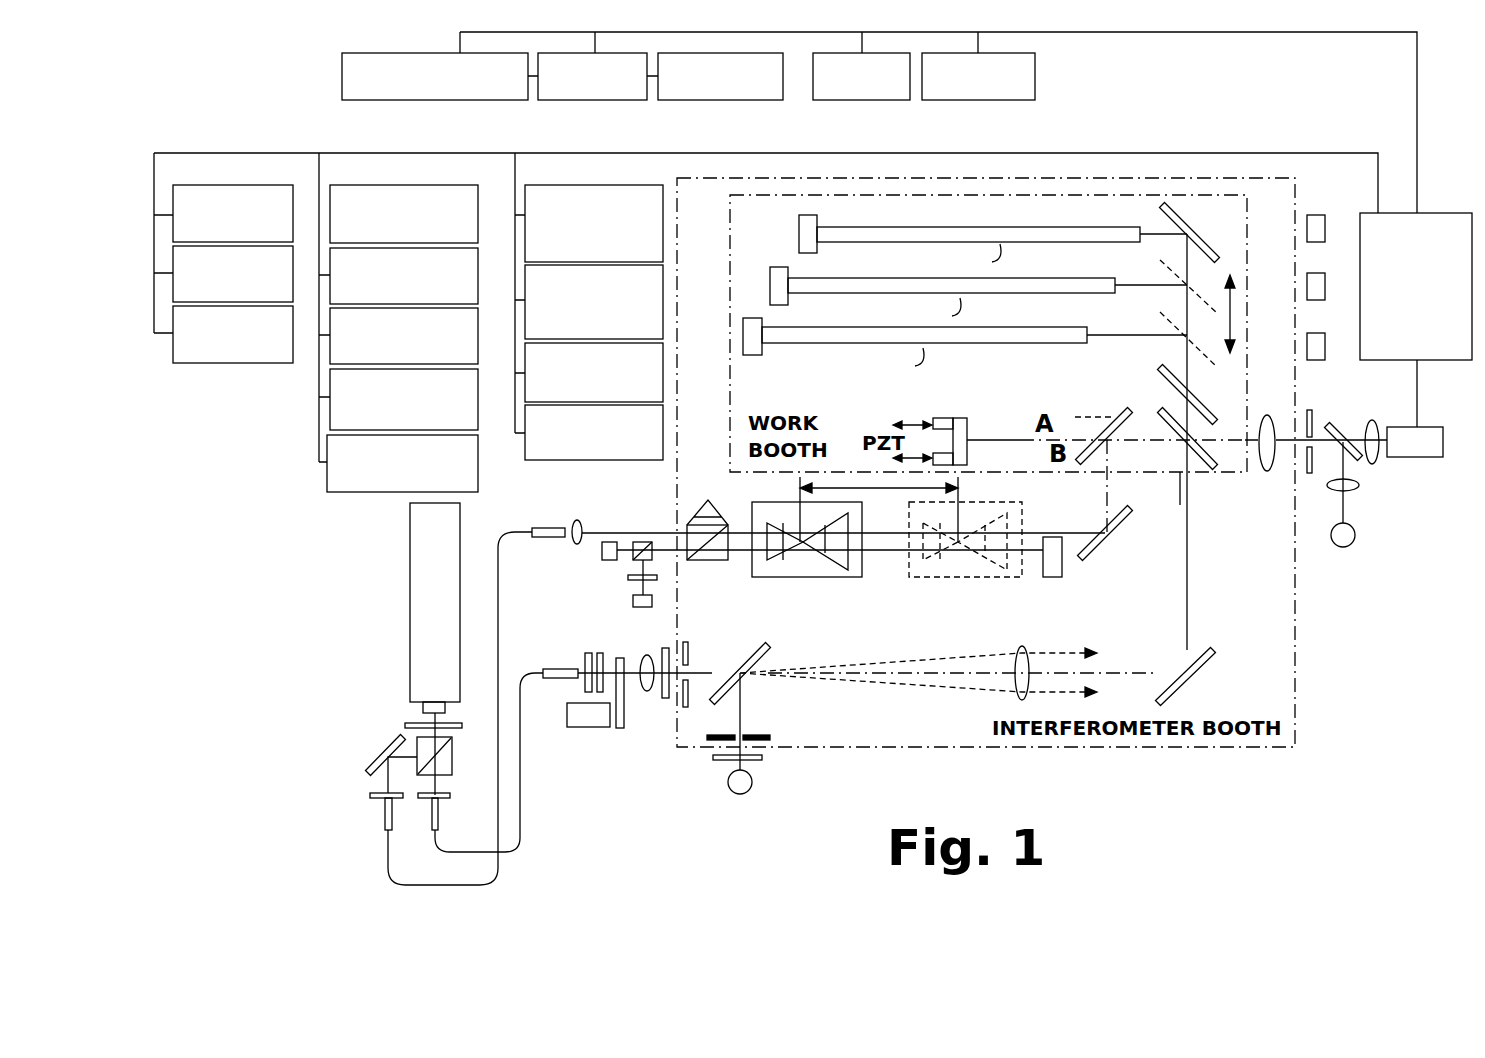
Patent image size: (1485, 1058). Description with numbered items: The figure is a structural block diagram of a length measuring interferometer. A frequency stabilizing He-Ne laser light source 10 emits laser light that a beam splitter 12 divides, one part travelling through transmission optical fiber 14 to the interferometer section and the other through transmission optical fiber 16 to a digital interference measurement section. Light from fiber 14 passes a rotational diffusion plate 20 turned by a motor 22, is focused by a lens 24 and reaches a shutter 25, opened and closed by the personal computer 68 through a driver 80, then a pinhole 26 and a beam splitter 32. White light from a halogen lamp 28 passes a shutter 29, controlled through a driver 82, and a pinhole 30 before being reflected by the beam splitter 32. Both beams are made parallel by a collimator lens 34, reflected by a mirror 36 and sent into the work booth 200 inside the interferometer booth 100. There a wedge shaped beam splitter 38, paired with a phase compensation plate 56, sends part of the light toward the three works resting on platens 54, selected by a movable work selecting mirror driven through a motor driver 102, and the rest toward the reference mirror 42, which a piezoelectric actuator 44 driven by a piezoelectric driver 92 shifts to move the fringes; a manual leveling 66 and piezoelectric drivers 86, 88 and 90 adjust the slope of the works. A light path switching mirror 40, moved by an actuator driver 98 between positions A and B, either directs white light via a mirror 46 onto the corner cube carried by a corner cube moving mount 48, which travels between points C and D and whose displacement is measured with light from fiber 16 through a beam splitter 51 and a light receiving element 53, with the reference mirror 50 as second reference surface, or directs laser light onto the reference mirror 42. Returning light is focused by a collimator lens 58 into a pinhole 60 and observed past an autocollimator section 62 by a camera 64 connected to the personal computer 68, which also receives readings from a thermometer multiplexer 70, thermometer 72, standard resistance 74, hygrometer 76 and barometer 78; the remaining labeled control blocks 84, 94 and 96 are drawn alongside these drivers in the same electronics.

The He-Ne laser light source 10 is at (410, 619).
The beam splitter 12 is at (452, 755).
The transmission optical fiber 14 is at (520, 810).
The transmission optical fiber 16 is at (498, 612).
The rotational diffusion plate 20 is at (620, 728).
The motor 22 is at (567, 716).
The lens 24 is at (650, 692).
The shutter 25 is at (665, 648).
The pinhole 26 is at (690, 705).
The halogen lamp 28 is at (745, 795).
The shutter 29 is at (713, 760).
The pinhole 30 is at (770, 740).
The beam splitter 32 is at (780, 637).
The collimator lens 34 is at (1012, 680).
The mirror 36 is at (1200, 668).
The beam splitter 38 is at (1202, 442).
The light path switching mirror 40 is at (1127, 424).
The reference mirror 42 is at (967, 425).
The PZT 44 is at (948, 418).
The mirror 46 is at (1127, 515).
The corner cube moving mount 48 is at (788, 577).
The reference mirror 50 is at (1062, 562).
The beam splitter 51 is at (706, 562).
The light receiving element 53 is at (633, 600).
The platen 54 is at (808, 253).
The phase compensation plate 56 is at (1160, 371).
The collimator lens 58 is at (1262, 470).
The pinhole 60 is at (1310, 473).
The autocollimator section 62 is at (1378, 477).
The CCD 64 is at (1432, 427).
The manual leveling 66 is at (1325, 228).
The personal computer 68 is at (1437, 213).
The thermometer multiplexer 70 is at (447, 100).
The thermometer 72 is at (615, 100).
The standard resistance 74 is at (740, 100).
The hygrometer 76 is at (888, 100).
The barometer 78 is at (975, 100).
The driver 80 is at (265, 185).
The driver 82 is at (293, 278).
The driver for shutter 3 84 is at (235, 363).
The PZT driver 86 is at (415, 185).
The PZT driver 88 is at (478, 283).
The PZT driver 90 is at (478, 345).
The PZT driver 92 is at (478, 405).
The I/O signals for various sensors 94 is at (478, 475).
The counter for fringe counting interferometer 96 is at (580, 185).
The actuator driver 98 is at (663, 305).
The interferometer booth 100 is at (663, 373).
The motor driver 102 is at (663, 430).
The work booth 200 is at (1180, 505).